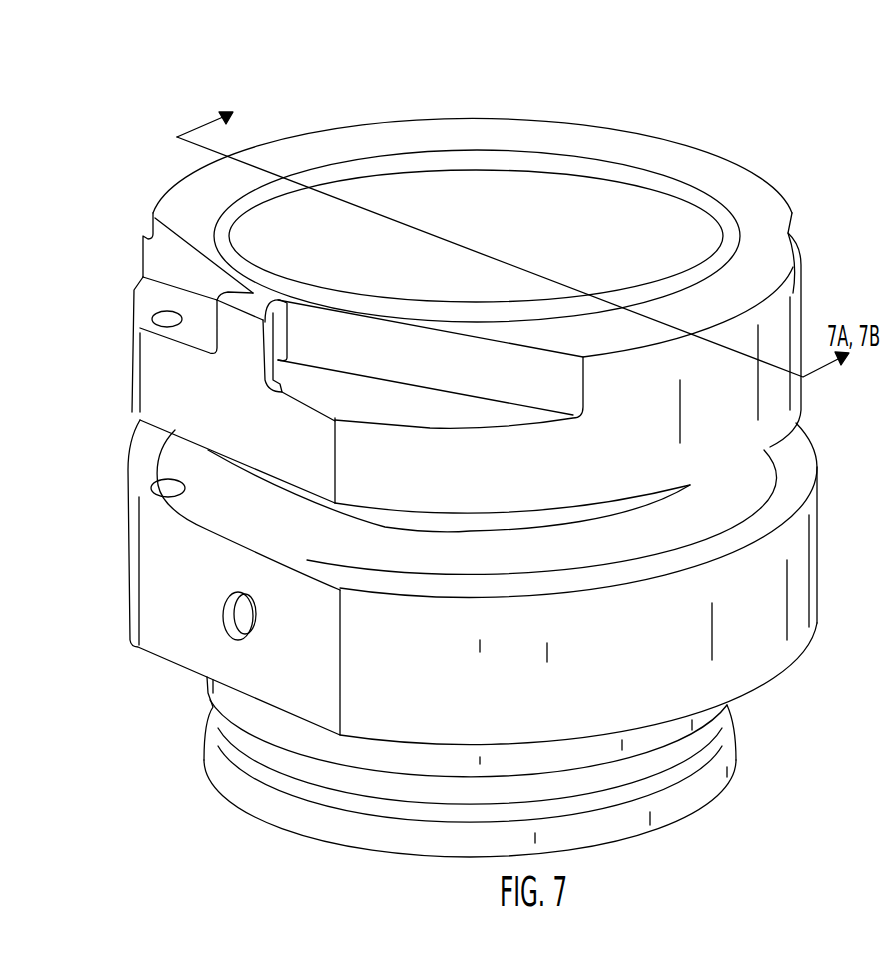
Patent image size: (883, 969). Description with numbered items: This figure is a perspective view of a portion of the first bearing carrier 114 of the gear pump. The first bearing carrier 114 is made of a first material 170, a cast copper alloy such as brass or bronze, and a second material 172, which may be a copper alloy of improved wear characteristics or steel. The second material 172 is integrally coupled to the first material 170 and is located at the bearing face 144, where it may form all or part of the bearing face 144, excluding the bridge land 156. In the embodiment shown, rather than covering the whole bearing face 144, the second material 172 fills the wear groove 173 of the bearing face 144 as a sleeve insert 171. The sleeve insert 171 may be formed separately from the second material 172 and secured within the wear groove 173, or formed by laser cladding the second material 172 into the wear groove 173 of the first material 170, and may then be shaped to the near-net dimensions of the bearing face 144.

The first bearing carrier 114 is at (224, 830).
The bearing face 144 is at (760, 316).
The bridge land 156 is at (120, 243).
The first material 170 is at (183, 405).
The sleeve insert 171 is at (647, 149).
The second material 172 is at (412, 152).
The wear groove 173 is at (726, 202).